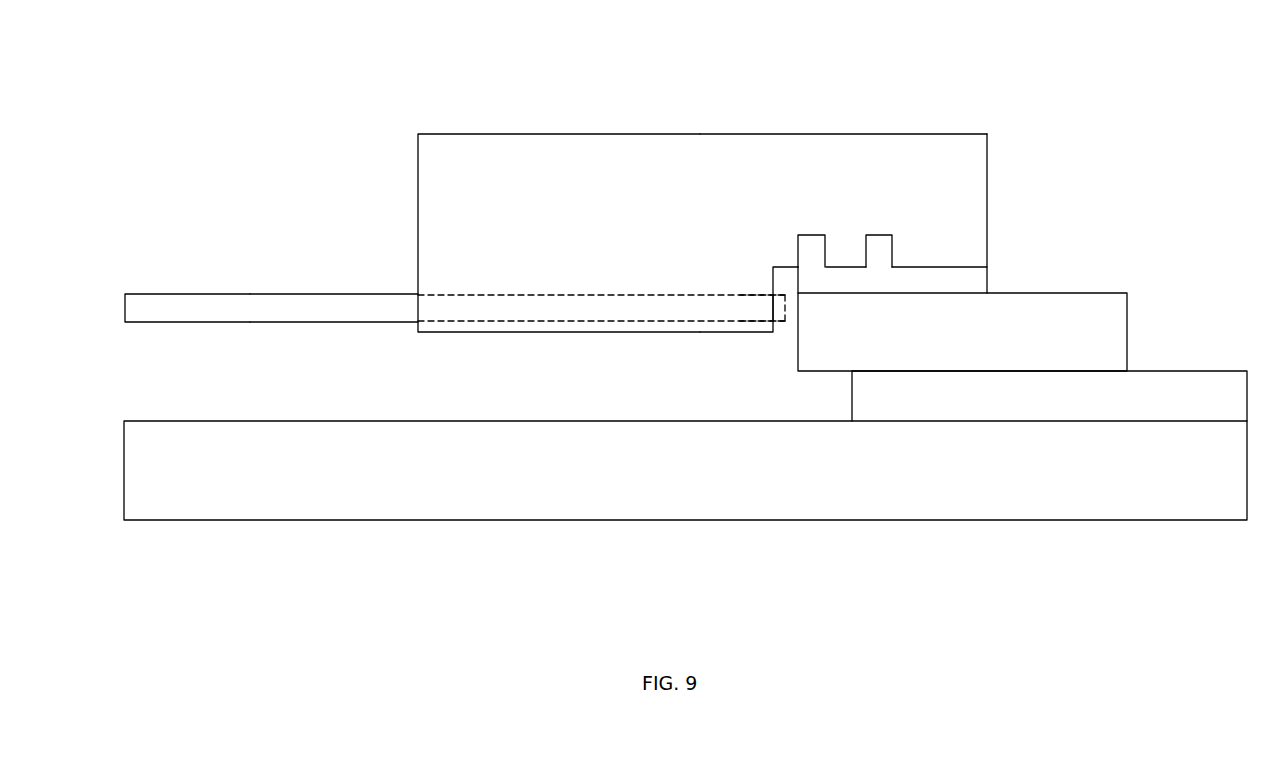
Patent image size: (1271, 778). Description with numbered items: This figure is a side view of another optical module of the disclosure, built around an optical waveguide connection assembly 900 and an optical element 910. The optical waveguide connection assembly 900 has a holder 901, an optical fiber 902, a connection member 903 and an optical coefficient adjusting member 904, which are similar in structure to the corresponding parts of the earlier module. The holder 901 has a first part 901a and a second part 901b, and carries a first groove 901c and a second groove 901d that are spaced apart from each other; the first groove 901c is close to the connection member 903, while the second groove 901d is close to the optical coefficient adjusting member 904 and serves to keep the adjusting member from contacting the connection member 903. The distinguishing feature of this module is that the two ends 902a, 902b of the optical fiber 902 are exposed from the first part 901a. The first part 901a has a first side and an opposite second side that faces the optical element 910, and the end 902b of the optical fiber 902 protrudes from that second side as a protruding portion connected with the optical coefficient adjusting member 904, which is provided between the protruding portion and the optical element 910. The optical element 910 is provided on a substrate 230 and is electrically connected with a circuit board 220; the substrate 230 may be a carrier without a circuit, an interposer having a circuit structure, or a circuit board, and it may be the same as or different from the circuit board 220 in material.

The optical waveguide connection assembly 900 is at (976, 133).
The holder 901 is at (833, 81).
The first part 901a is at (630, 145).
The second part 901b is at (800, 145).
The first groove 901c is at (877, 235).
The second groove 901d is at (809, 255).
The optical fiber 902 is at (307, 293).
The end of optical fiber 902a is at (172, 307).
The end of optical fiber 902b is at (777, 308).
The connection member 903 is at (945, 283).
The optical coefficient adjusting member 904 is at (783, 325).
The optical element 910 is at (978, 343).
The circuit board 220 is at (1067, 409).
The substrate 230 is at (703, 485).